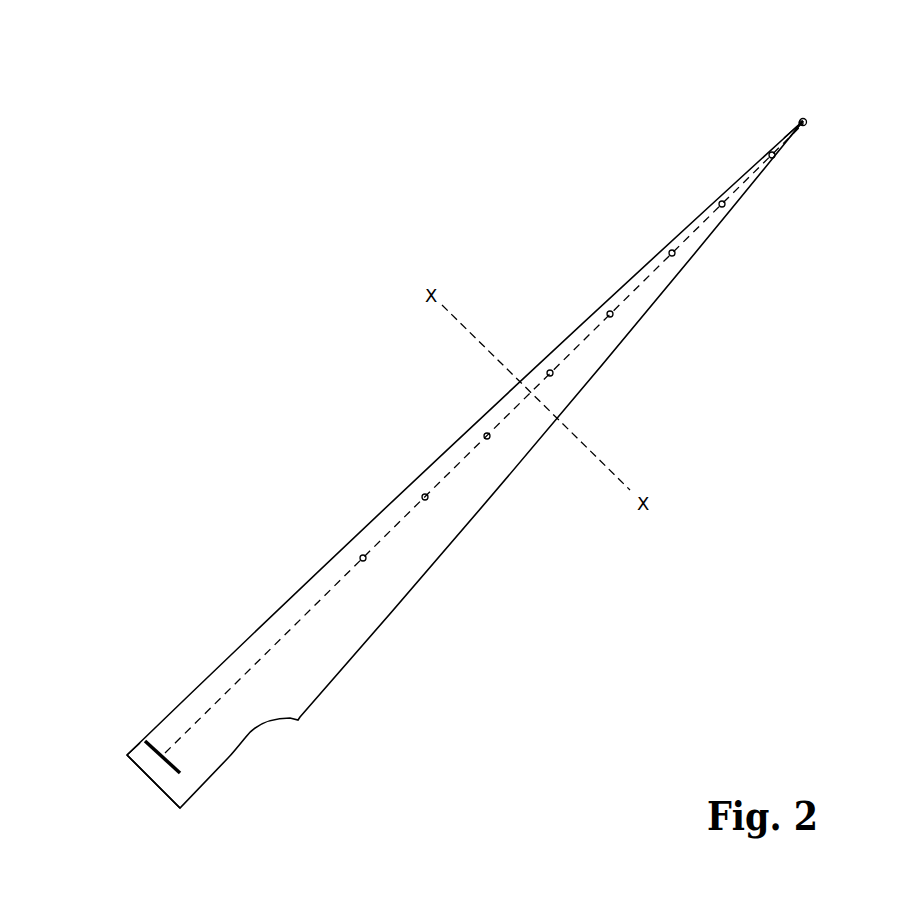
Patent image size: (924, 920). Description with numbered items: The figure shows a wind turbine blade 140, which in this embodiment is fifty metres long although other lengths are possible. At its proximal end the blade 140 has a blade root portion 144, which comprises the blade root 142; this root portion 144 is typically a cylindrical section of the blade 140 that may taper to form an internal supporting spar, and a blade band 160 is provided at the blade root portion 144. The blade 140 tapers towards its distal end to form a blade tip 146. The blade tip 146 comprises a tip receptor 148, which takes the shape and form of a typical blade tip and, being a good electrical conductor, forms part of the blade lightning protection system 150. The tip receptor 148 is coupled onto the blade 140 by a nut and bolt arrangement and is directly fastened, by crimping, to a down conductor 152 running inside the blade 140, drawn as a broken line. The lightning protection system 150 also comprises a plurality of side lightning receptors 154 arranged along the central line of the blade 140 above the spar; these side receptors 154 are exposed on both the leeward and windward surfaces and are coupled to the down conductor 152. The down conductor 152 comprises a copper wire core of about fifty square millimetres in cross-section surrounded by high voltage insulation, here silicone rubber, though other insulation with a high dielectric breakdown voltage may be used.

The wind turbine blade 140 is at (503, 239).
The blade root 142 is at (131, 764).
The blade root portion 144 is at (128, 745).
The blade tip 146 is at (804, 110).
The tip receptor 148 is at (807, 117).
The blade lightning protection system 150 is at (798, 118).
The down conductor 152 is at (232, 686).
The side lightning receptors 154 is at (487, 433).
The blade band 160 is at (165, 764).